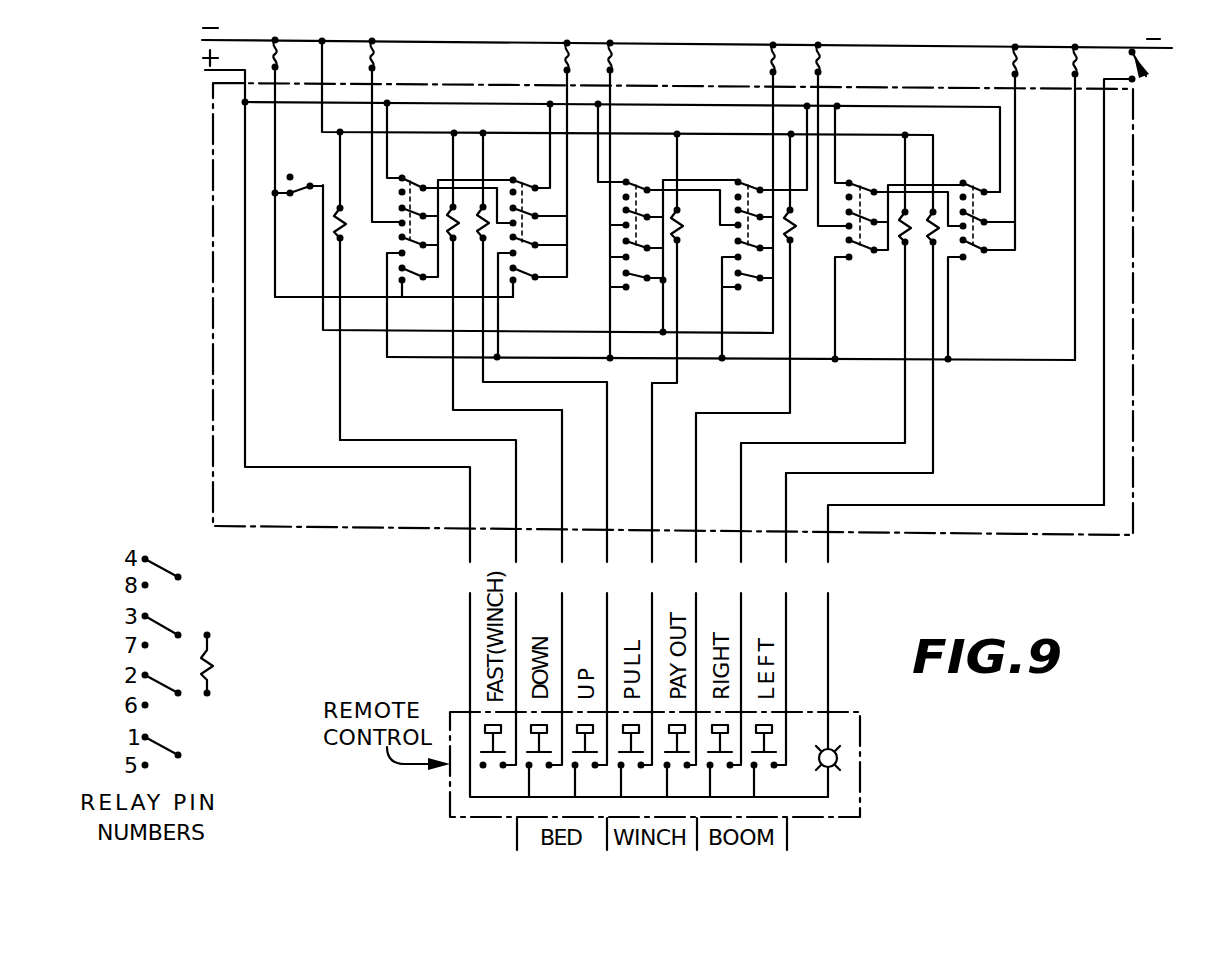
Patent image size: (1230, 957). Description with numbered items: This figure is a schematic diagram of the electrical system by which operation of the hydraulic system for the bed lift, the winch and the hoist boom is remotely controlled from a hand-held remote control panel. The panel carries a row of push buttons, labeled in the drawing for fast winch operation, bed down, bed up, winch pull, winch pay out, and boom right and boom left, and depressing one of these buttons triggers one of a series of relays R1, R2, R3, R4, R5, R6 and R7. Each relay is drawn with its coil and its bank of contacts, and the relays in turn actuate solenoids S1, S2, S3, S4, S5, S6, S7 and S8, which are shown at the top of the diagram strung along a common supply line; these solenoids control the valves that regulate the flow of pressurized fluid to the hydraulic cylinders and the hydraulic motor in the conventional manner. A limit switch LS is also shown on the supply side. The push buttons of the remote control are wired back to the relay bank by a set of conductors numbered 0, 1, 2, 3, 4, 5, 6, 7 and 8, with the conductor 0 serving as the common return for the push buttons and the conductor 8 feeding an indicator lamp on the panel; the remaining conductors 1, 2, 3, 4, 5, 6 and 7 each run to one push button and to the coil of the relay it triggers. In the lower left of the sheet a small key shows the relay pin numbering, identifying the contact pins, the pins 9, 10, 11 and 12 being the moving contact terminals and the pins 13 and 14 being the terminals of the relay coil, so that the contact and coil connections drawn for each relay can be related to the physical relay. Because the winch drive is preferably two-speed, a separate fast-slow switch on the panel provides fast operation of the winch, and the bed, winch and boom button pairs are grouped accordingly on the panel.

The common wire 0 is at (516, 433).
The wire 1 (down) 1 is at (560, 587).
The wire 2 (up) 2 is at (605, 573).
The wire 3 (pull) 3 is at (650, 574).
The wire 4 (pay out) 4 is at (695, 589).
The wire 5 (right) 5 is at (739, 604).
The wire 6 (left) 6 is at (784, 619).
The wire 7 (fast winch) 7 is at (432, 602).
The wire 8 (indicator lamp) 8 is at (960, 651).
The relay pin 9 is at (172, 753).
The relay pin 10 is at (178, 690).
The relay pin 11 is at (178, 632).
The relay pin 12 is at (178, 574).
The relay pin 13 is at (224, 693).
The relay pin 14 is at (222, 651).
The solenoid S1 is at (390, 55).
The solenoid S2 is at (549, 57).
The solenoid S3 is at (626, 57).
The solenoid S4 is at (755, 59).
The solenoid S5 is at (836, 59).
The solenoid S6 is at (999, 61).
The solenoid S7 is at (291, 54).
The solenoid S8 is at (1092, 61).
The relay R1 is at (467, 239).
The relay R2 is at (542, 226).
The relay R3 is at (668, 226).
The relay R4 is at (751, 242).
The relay R5 is at (852, 257).
The relay R6 is at (900, 273).
The relay R7 is at (309, 253).
The limit switch LS is at (1145, 277).